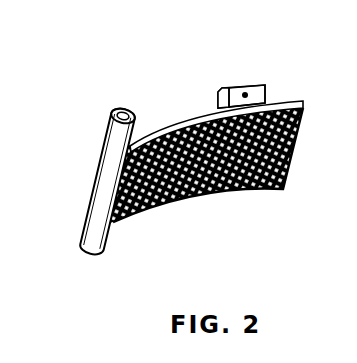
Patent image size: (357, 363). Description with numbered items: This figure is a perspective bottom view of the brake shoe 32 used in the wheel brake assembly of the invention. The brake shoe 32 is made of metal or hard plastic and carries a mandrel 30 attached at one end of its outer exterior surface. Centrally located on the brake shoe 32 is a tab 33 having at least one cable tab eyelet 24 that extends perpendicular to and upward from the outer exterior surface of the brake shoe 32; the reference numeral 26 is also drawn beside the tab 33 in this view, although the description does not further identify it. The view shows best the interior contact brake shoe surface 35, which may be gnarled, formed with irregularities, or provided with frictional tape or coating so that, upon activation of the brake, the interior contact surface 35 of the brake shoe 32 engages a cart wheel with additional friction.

The cable tab eyelet 24 is at (245, 90).
The bracket side flange 26 is at (227, 90).
The mandrel 30 is at (105, 183).
The brake shoe 32 is at (177, 118).
The tab 33 is at (257, 97).
The interior contact brake shoe surface 35 is at (200, 172).